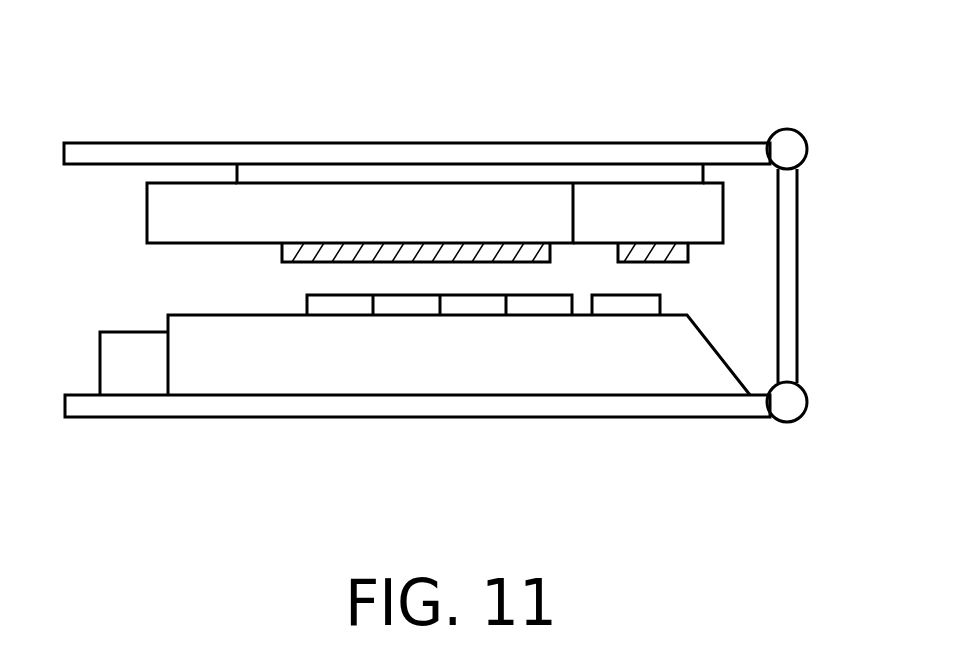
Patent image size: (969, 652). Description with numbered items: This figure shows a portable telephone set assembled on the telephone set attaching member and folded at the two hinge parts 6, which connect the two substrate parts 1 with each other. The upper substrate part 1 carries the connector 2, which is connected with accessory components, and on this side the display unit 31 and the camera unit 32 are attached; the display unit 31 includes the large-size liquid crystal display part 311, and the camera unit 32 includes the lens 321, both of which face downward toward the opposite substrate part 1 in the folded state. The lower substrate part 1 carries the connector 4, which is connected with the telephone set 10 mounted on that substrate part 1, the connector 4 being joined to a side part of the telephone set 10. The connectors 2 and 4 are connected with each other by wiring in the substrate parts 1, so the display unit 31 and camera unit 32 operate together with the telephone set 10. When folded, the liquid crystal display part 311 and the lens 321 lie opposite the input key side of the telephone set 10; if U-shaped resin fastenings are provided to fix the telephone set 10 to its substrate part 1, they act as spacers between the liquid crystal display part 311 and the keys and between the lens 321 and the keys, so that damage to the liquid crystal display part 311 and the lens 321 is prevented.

The substrate part 1 is at (230, 417).
The connector 2 is at (313, 170).
The connector 4 is at (125, 368).
The hinge part 6 is at (807, 143).
The telephone set 10 is at (407, 370).
The display unit 31 is at (425, 210).
The camera unit 32 is at (673, 200).
The liquid crystal display part 311 is at (300, 250).
The lens 321 is at (643, 250).